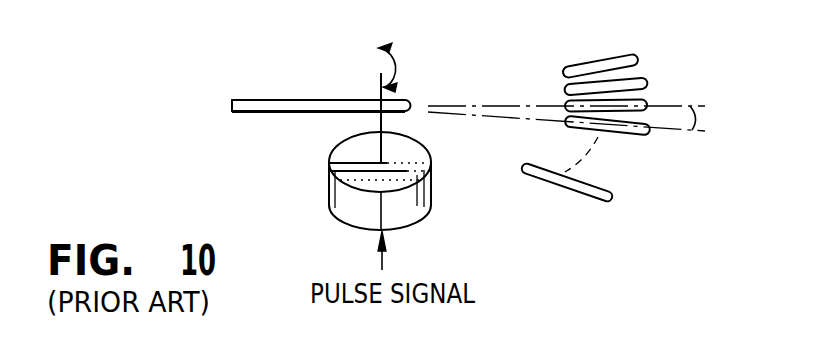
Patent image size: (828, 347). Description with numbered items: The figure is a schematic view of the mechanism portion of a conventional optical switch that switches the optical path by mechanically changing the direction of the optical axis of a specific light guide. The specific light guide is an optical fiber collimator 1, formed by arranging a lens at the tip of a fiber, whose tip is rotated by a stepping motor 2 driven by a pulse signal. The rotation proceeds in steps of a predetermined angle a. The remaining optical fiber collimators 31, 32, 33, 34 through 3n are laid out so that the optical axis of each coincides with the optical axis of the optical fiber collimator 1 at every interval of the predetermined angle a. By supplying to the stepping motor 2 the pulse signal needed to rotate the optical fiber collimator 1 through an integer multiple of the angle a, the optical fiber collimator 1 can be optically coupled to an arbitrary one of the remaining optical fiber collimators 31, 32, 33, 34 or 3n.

The optical fiber collimator 1 is at (277, 112).
The stepping motor 2 is at (333, 197).
The optical fiber collimator 31 is at (596, 62).
The optical fiber collimator 32 is at (648, 77).
The optical fiber collimator 33 is at (650, 99).
The optical fiber collimator 34 is at (624, 133).
The optical fiber collimator 3n is at (537, 178).
The predetermined angle a is at (699, 118).